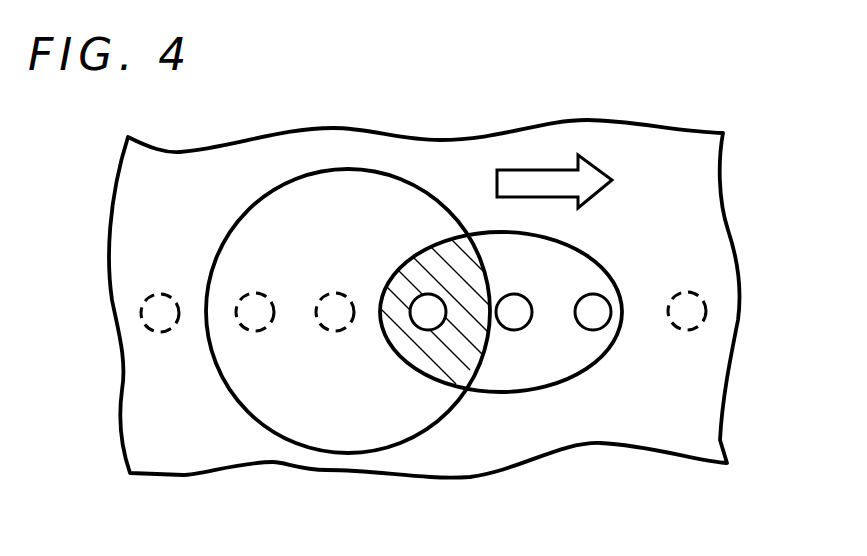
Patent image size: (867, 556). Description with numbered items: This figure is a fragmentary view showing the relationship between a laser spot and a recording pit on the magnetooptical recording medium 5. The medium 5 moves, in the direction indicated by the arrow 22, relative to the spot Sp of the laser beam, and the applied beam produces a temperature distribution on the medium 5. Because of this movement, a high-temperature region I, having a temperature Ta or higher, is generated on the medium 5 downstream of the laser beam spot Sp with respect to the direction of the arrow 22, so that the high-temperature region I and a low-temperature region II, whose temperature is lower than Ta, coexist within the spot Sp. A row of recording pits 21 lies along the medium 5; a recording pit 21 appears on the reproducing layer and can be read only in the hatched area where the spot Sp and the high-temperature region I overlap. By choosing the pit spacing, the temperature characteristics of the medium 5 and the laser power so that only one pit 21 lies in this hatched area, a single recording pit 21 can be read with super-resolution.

The magnetooptical recording medium 5 is at (717, 388).
The recording pit 21 is at (160, 293).
The arrow 22 is at (527, 178).
The high-temperature region I is at (533, 391).
The low-temperature region II is at (324, 434).
The laser beam spot Sp is at (243, 403).